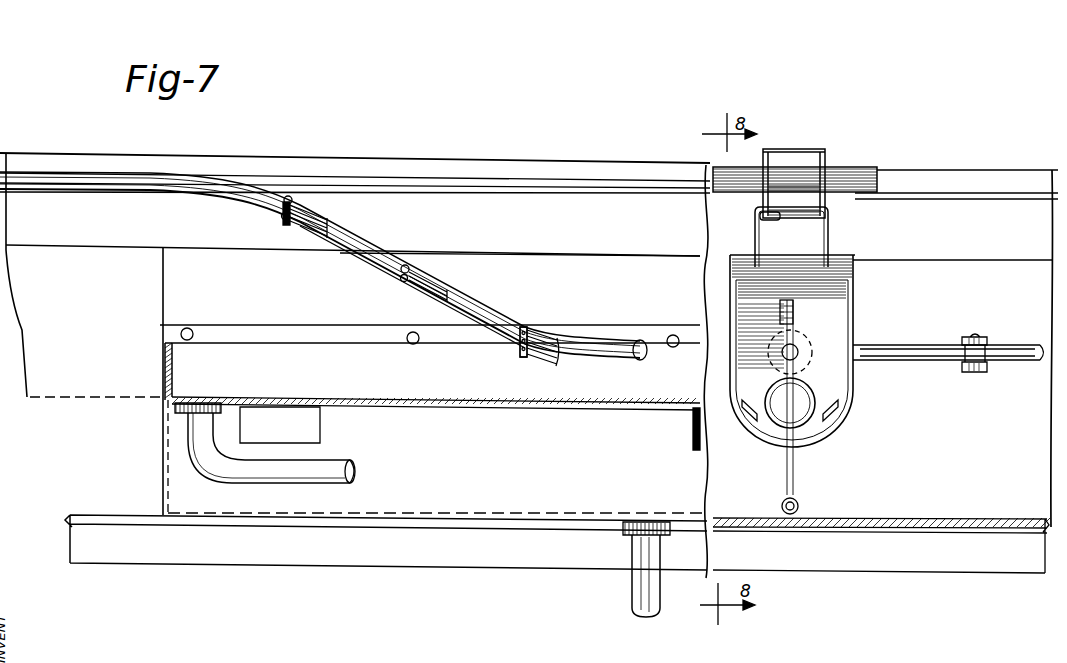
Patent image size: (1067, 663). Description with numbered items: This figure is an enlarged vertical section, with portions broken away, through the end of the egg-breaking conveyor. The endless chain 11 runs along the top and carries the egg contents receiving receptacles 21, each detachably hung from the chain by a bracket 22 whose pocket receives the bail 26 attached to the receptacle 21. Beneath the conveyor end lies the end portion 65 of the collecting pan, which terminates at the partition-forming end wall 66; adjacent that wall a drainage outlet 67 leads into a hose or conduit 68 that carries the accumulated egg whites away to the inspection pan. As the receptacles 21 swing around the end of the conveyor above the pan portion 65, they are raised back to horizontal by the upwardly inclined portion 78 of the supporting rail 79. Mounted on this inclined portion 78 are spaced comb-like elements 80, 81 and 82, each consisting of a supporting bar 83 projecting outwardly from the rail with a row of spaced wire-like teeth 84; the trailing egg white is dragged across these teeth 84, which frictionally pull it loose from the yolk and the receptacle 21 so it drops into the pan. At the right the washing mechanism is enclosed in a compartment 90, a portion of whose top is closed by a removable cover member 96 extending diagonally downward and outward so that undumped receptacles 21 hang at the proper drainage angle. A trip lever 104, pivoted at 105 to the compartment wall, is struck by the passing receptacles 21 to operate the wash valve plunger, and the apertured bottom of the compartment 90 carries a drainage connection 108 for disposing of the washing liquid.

The endless chain 11 is at (862, 178).
The egg contents receiving receptacle 21 is at (855, 318).
The bracket 22 is at (822, 168).
The bail 26 is at (829, 238).
The end portion of the collecting pan 65 is at (521, 406).
The end wall 66 is at (166, 358).
The drainage outlet 67 is at (205, 399).
The hose or conduit 68 is at (346, 459).
The upwardly inclined portion of the rail 78 is at (436, 293).
The supporting rail 79 is at (18, 183).
The comb-like element 80 is at (523, 358).
The comb-like element 81 is at (405, 265).
The comb-like element 82 is at (290, 197).
The supporting bar 83 is at (283, 219).
The wire-like teeth 84 is at (314, 214).
The compartment 90 is at (866, 512).
The cover member 96 is at (600, 267).
The trip lever 104 is at (898, 346).
The pivot 105 is at (968, 372).
The drainage connection 108 is at (640, 590).